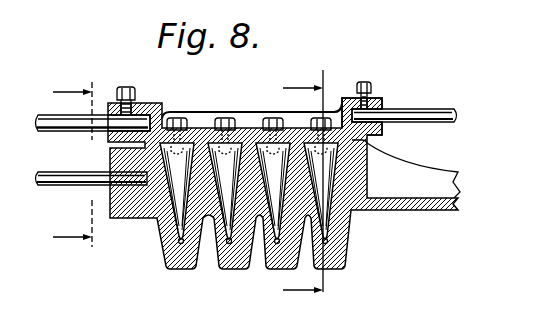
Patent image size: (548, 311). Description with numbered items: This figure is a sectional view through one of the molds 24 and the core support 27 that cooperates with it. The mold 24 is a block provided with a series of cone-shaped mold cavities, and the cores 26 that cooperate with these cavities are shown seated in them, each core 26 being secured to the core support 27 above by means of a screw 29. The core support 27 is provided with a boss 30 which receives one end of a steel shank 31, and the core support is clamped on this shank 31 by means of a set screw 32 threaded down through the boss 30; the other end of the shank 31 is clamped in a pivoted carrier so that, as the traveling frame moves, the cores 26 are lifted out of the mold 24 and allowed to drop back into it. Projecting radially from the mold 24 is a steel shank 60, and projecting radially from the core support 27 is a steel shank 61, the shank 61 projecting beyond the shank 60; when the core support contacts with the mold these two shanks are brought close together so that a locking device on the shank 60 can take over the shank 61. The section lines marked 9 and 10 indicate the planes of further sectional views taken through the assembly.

The section line 9- 9 is at (60, 166).
The section line 10- 10 is at (286, 187).
The mold 24 is at (352, 222).
The core 26 is at (160, 228).
The core support 27 is at (220, 123).
The screw 29 is at (184, 121).
The boss 30 is at (381, 99).
The steel shank 31 is at (438, 120).
The set screw 32 is at (363, 82).
The steel shank 60 is at (90, 175).
The steel shank 61 is at (73, 123).